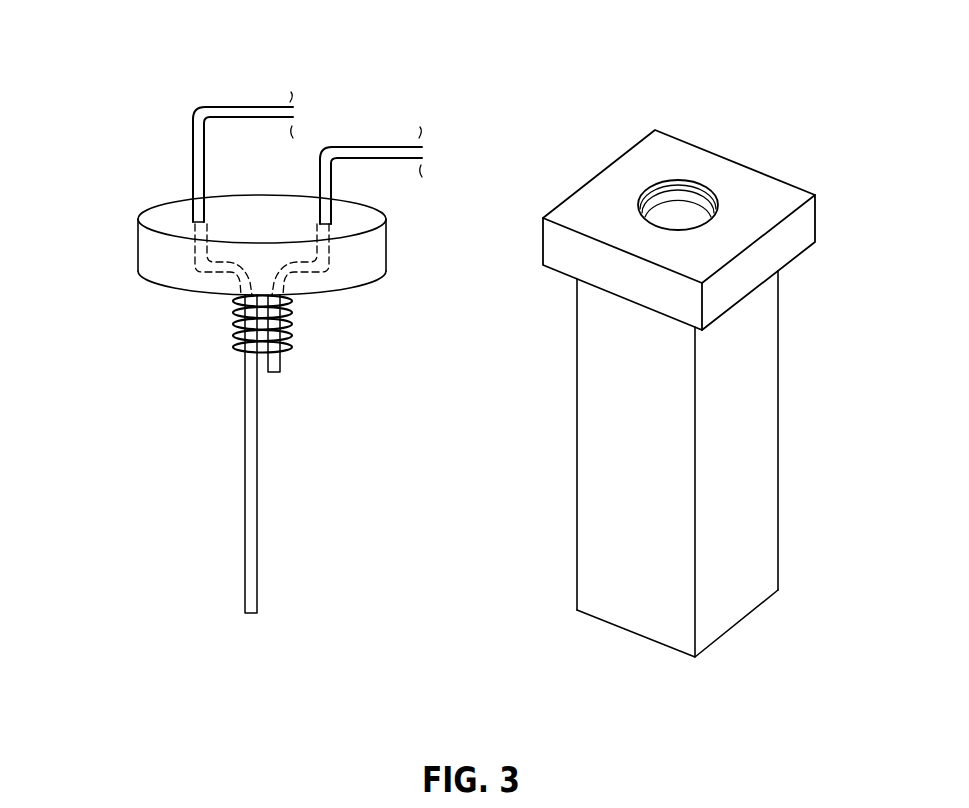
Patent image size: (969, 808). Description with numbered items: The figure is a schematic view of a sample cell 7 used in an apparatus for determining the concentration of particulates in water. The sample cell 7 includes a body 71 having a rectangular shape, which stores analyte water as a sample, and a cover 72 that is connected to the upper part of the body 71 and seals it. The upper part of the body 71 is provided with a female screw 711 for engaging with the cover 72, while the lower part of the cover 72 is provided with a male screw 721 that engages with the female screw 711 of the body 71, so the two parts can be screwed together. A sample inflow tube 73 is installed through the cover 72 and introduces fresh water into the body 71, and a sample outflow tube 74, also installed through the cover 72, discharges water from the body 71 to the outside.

The sample cell 7 is at (699, 365).
The body 71 is at (773, 413).
The female screw 711 is at (720, 165).
The cover 72 is at (137, 242).
The male screw 721 is at (232, 318).
The sample inflow tube 73 is at (240, 109).
The sample outflow tube 74 is at (367, 149).